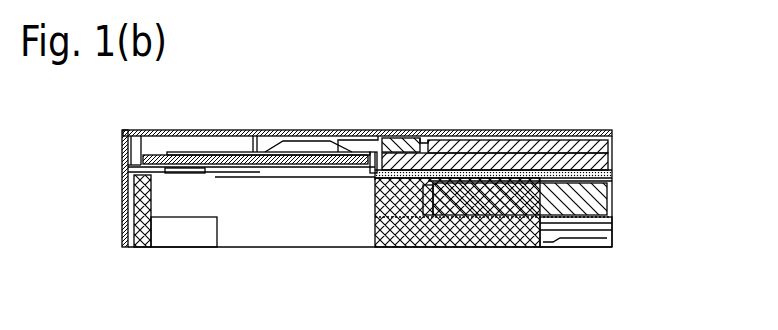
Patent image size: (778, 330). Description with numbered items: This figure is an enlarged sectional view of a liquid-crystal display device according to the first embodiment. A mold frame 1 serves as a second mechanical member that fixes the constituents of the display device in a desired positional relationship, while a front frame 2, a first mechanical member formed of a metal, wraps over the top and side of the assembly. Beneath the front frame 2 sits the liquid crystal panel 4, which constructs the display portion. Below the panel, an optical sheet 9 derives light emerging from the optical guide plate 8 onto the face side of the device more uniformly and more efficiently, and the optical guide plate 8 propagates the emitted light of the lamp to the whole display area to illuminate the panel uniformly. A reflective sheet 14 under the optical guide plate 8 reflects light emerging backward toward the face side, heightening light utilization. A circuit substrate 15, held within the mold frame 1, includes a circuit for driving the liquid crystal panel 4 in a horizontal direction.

The mold frame 1 is at (430, 247).
The front frame 2 is at (183, 133).
The liquid crystal panel 4 is at (500, 155).
The optical guide plate 8 is at (593, 208).
The optical sheet 9 is at (611, 167).
The reflective sheet 14 is at (607, 222).
The circuit substrate 15 is at (307, 160).